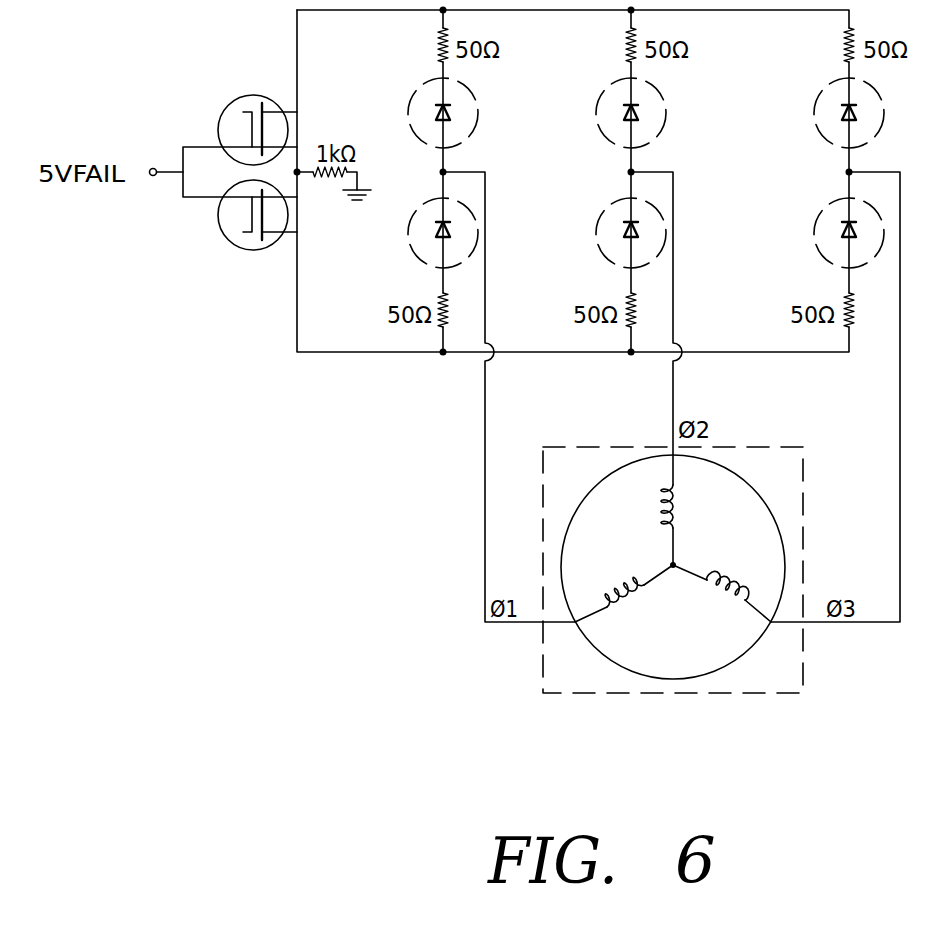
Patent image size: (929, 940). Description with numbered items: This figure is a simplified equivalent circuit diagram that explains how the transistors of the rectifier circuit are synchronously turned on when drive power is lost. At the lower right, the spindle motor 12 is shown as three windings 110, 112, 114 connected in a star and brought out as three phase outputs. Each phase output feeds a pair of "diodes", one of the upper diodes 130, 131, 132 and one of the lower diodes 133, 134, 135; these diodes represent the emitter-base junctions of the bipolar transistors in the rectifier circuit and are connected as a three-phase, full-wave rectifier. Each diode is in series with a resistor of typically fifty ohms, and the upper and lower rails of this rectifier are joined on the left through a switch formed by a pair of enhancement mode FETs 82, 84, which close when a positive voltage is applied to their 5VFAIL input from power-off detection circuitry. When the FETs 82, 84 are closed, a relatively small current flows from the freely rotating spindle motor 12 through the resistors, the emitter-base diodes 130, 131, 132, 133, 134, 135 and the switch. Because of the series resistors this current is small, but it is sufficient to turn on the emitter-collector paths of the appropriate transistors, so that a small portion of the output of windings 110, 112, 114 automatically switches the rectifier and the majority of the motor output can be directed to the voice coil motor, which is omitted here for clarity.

The spindle motor 12 is at (803, 693).
The enhancement mode FET 82 is at (262, 96).
The enhancement mode FET 84 is at (252, 250).
The spindle motor winding 110 is at (628, 606).
The spindle motor winding 112 is at (674, 510).
The spindle motor winding 114 is at (727, 600).
The diode 130 is at (428, 82).
The diode 131 is at (617, 82).
The diode 132 is at (834, 84).
The diode 133 is at (410, 236).
The diode 134 is at (606, 212).
The diode 135 is at (824, 212).